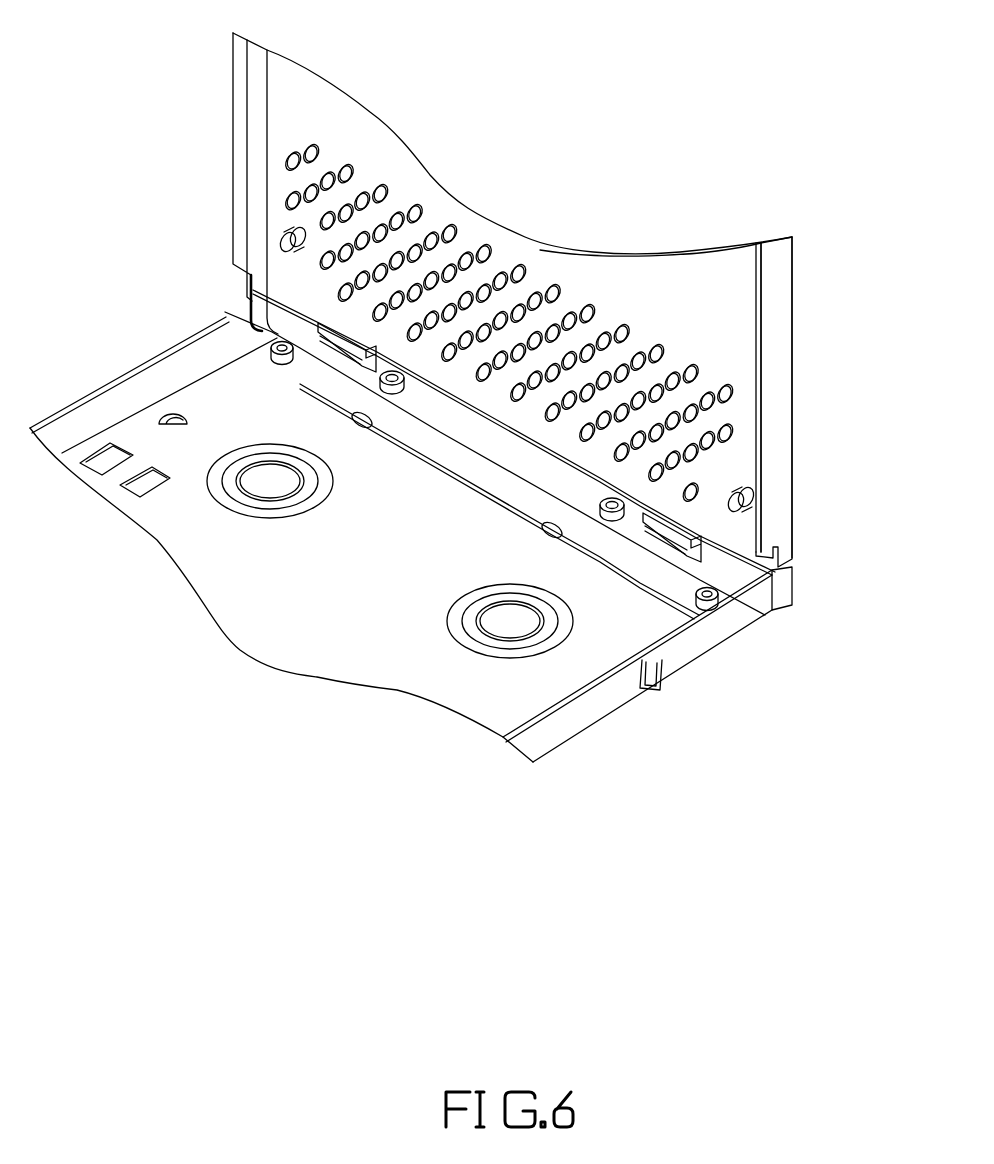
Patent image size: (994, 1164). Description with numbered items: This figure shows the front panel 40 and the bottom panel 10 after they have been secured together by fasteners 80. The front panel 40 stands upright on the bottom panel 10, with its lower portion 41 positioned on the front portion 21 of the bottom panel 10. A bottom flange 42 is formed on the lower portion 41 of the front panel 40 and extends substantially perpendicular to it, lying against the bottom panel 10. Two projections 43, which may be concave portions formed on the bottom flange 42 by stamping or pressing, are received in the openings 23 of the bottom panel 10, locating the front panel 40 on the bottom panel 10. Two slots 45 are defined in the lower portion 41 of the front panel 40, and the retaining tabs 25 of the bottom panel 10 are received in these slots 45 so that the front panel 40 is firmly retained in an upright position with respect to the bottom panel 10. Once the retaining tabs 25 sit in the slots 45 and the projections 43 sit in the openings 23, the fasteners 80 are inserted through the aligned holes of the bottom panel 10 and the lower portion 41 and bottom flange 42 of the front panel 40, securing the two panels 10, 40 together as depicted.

The bottom panel 10 is at (608, 724).
The front portion 21 is at (327, 636).
The openings 23 is at (373, 428).
The retaining tabs 25 is at (334, 353).
The front panel 40 is at (797, 367).
The lower portion 41 is at (743, 575).
The bottom flange 42 is at (480, 473).
The projections 43 is at (352, 416).
The slots 45 is at (360, 372).
The fasteners 80 is at (281, 348).